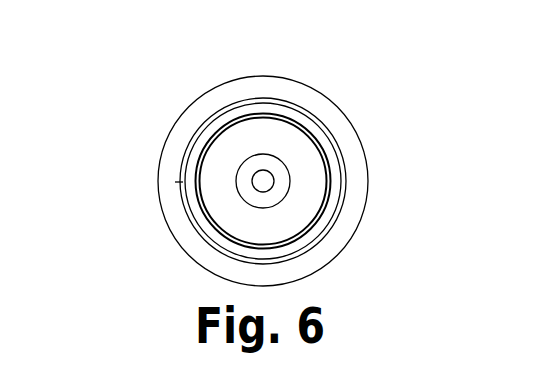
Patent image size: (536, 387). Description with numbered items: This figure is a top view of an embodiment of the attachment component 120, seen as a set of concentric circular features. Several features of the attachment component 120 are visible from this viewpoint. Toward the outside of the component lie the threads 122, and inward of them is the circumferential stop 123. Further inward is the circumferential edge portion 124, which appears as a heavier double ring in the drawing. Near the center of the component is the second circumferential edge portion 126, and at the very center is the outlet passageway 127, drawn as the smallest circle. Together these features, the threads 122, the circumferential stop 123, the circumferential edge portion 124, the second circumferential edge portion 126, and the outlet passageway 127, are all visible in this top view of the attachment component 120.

The attachment component 120 is at (143, 204).
The threads 122 is at (307, 110).
The circumferential stop 123 is at (332, 150).
The circumferential edge portion 124 is at (243, 142).
The second circumferential edge portion 126 is at (272, 195).
The outlet passageway 127 is at (263, 179).